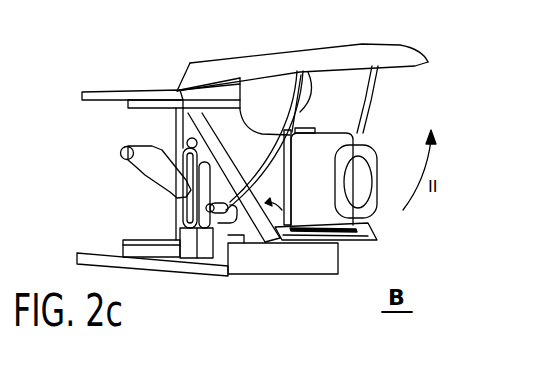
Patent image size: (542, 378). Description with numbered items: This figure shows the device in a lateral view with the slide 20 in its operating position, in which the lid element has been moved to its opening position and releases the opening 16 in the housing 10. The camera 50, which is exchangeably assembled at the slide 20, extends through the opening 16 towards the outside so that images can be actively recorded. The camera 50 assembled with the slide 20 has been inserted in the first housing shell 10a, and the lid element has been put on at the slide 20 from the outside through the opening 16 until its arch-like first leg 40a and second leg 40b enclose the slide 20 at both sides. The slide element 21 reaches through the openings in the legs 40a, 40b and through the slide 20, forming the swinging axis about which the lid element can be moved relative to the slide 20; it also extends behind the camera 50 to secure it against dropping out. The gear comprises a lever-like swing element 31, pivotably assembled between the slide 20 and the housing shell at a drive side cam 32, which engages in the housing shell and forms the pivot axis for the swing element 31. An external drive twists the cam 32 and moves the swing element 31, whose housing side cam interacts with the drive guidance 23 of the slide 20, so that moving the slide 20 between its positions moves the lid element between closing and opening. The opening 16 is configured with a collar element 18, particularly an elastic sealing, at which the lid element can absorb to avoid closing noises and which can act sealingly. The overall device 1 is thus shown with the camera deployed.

The device 1 is at (220, 177).
The housing 10 is at (345, 58).
The first housing shell 10a is at (160, 95).
The opening 16 is at (283, 203).
The collar element 18 is at (207, 135).
The slide 20 is at (248, 215).
The slide element 21 is at (222, 215).
The drive guidance 23 is at (192, 213).
The swing element 31 is at (150, 177).
The drive side cam 32 is at (123, 155).
The first leg 40a is at (350, 100).
The second leg 40b is at (279, 93).
The camera 50 is at (357, 222).